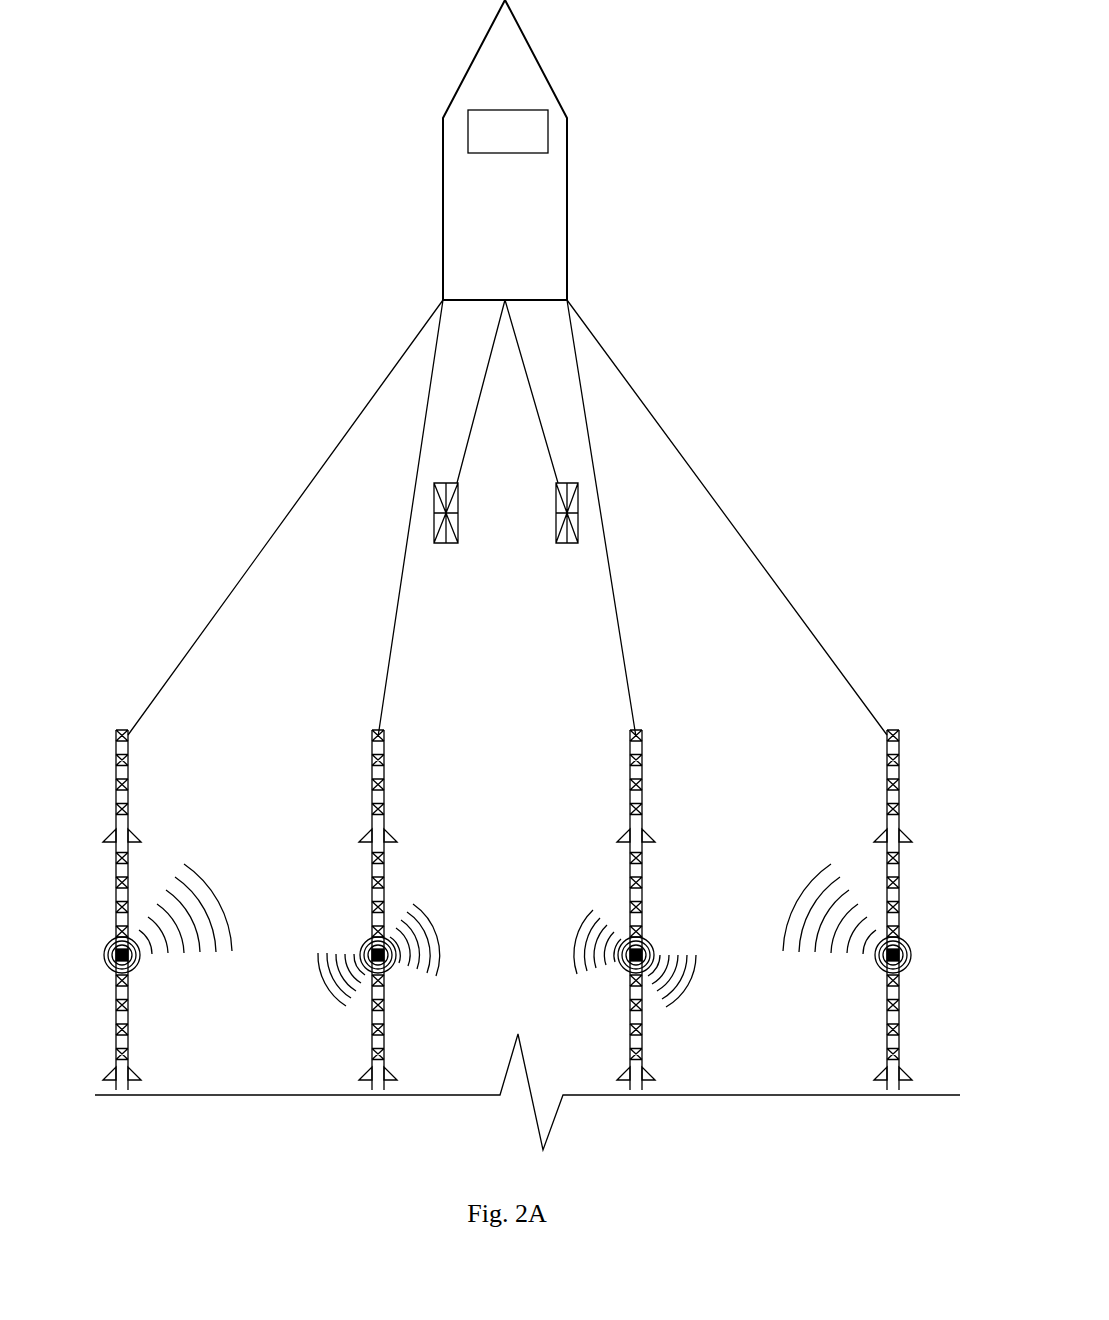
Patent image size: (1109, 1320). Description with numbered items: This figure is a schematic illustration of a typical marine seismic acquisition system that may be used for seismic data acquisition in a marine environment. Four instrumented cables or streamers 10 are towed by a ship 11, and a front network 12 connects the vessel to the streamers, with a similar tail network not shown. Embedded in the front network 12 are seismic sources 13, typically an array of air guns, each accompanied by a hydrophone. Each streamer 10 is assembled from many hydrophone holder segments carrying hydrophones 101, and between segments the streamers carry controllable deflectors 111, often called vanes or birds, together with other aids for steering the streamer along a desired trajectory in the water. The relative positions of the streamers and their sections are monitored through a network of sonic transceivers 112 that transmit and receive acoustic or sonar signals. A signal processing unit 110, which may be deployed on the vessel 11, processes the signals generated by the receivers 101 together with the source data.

The streamer 10 is at (200, 728).
The ship 11 is at (497, 252).
The front network 12 is at (364, 384).
The seismic sources 13 is at (458, 513).
The hydrophones 101 is at (128, 758).
The signal processing unit 110 is at (492, 133).
The controllable deflectors 111 is at (385, 840).
The sonic transceivers 112 is at (110, 953).